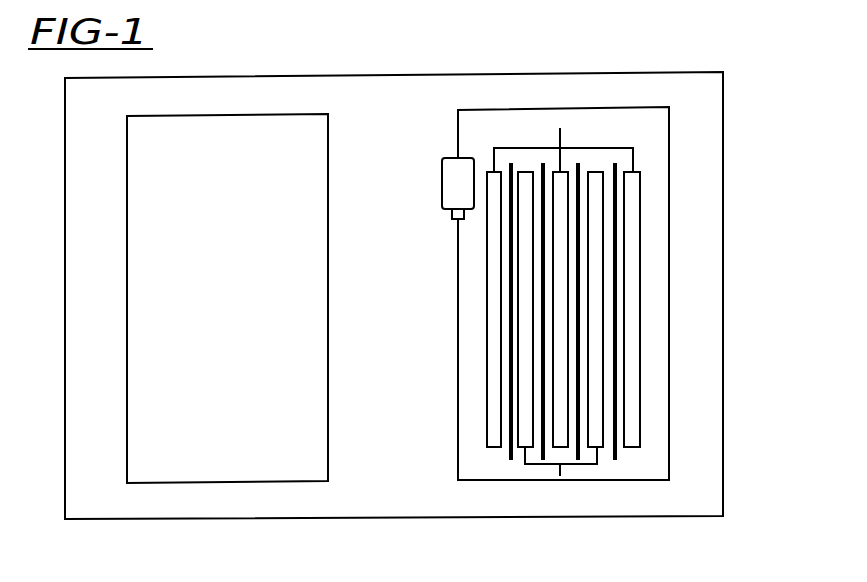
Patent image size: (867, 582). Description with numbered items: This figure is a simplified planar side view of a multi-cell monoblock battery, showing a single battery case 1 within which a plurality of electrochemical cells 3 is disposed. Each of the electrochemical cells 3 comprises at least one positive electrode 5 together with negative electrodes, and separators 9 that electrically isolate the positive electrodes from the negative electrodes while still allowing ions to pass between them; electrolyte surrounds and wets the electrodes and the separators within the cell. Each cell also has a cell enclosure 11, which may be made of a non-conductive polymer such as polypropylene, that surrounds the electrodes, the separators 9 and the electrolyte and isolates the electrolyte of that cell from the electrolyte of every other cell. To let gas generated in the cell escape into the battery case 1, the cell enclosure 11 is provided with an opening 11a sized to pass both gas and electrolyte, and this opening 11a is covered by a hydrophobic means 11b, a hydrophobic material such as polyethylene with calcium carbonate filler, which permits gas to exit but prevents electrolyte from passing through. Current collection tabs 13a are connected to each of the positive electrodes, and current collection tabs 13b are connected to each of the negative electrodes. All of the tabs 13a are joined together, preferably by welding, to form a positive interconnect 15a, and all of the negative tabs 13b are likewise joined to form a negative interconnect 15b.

The battery case 1 is at (726, 134).
The electrochemical cells 3 is at (342, 128).
The positive electrode 5 is at (648, 453).
The separators 9 is at (614, 466).
The cell enclosure 11 is at (481, 106).
The opening 11a is at (455, 156).
The hydrophobic means 11b is at (438, 195).
The current collection tabs 13a is at (531, 142).
The current collection tabs 13b is at (521, 467).
The positive interconnect 15a is at (567, 137).
The negative interconnect 15b is at (570, 470).